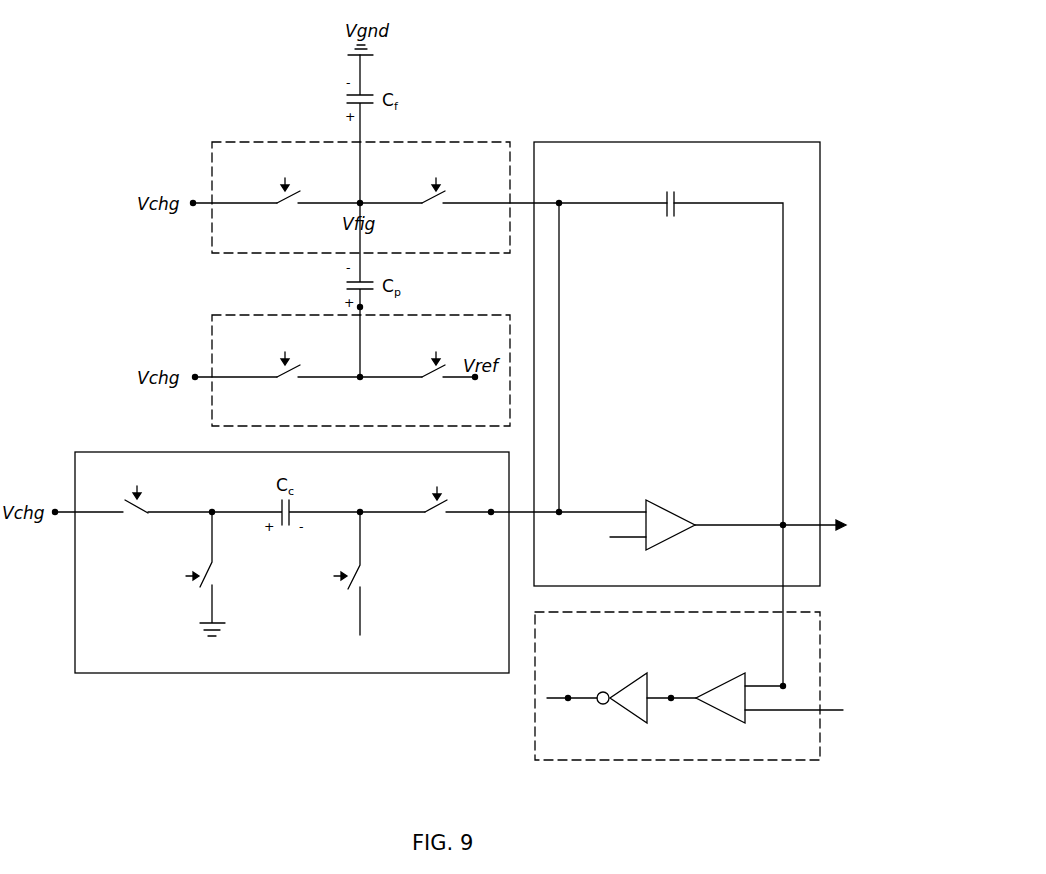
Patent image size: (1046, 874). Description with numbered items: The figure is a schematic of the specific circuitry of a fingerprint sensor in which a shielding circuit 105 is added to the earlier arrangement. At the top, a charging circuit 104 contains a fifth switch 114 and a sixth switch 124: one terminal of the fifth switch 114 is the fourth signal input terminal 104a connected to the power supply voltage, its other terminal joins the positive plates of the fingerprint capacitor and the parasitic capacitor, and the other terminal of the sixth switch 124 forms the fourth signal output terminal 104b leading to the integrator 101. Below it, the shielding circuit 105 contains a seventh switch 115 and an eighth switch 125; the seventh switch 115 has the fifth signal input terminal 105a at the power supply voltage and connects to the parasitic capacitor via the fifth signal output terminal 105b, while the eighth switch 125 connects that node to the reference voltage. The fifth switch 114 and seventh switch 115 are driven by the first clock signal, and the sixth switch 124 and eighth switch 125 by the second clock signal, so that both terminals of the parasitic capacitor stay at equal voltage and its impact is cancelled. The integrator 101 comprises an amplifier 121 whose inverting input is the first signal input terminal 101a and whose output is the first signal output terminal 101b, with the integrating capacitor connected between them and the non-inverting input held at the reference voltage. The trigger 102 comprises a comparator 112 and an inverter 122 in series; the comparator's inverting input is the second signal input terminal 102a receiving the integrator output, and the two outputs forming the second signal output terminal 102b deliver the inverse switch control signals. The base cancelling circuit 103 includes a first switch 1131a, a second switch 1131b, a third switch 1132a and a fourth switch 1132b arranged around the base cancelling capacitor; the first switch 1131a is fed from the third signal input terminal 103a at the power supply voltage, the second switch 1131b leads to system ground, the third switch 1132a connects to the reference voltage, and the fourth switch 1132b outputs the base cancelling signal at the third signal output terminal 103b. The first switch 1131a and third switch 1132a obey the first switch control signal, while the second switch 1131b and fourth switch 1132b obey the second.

The integrator 101 is at (733, 142).
The trigger 102 is at (658, 762).
The base cancelling circuit 103 is at (273, 674).
The charging circuit 104 is at (436, 142).
The shielding circuit 105 is at (436, 315).
The comparator 112 is at (733, 672).
The amplifier 121 is at (660, 499).
The inverter 122 is at (633, 672).
The fifth switch 114 is at (278, 202).
The sixth switch 124 is at (426, 202).
The seventh switch 115 is at (278, 376).
The eighth switch 125 is at (426, 376).
The first switch 1131a is at (140, 507).
The second switch 1131b is at (210, 567).
The third switch 1132a is at (357, 568).
The fourth switch 1132b is at (432, 509).
The fourth signal input terminal 104a is at (196, 195).
The fourth signal output terminal 104b is at (563, 196).
The fifth signal input terminal 105a is at (196, 369).
The fifth signal output terminal 105b is at (377, 307).
The third signal input terminal 103a is at (56, 504).
The third signal output terminal 103b is at (488, 522).
The first signal input terminal 101a is at (561, 521).
The first signal output terminal 101b is at (768, 532).
The second signal input terminal 102a is at (769, 677).
The second signal output terminal 102b is at (621, 706).